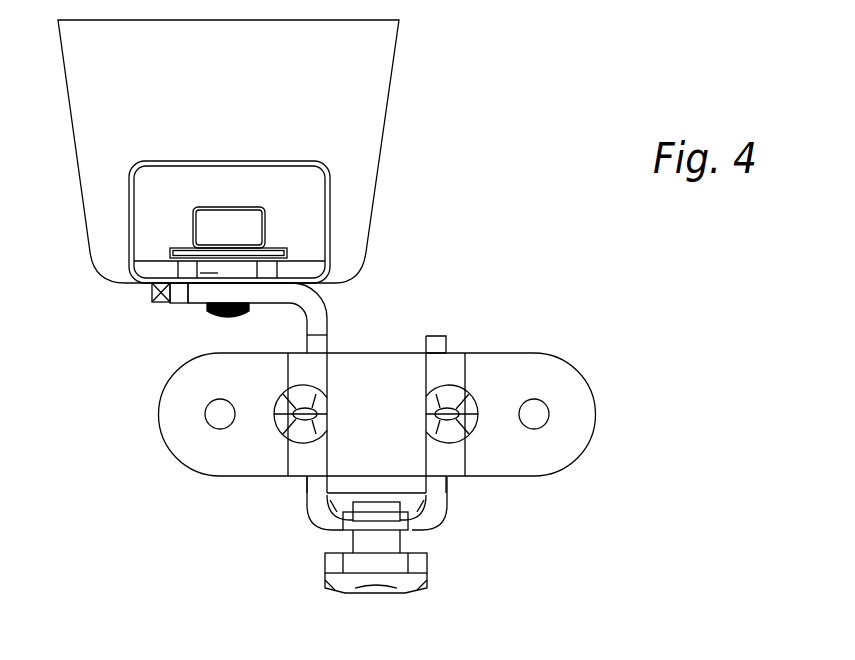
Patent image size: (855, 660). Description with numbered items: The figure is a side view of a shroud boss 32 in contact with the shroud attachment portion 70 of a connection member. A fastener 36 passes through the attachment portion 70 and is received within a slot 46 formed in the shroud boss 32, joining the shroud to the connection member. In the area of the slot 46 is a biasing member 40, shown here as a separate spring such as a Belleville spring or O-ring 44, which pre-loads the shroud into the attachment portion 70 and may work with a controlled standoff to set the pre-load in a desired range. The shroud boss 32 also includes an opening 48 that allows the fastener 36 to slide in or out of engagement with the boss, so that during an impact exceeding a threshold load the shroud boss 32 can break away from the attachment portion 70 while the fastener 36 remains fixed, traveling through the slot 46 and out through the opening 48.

The shroud boss 32 is at (373, 97).
The opening 48 is at (300, 212).
The fastener 36 is at (207, 222).
The Belleville spring or O-ring 44 is at (335, 241).
The biasing member 40 is at (288, 252).
The slot 46 is at (158, 295).
The attachment portion 70 is at (203, 295).